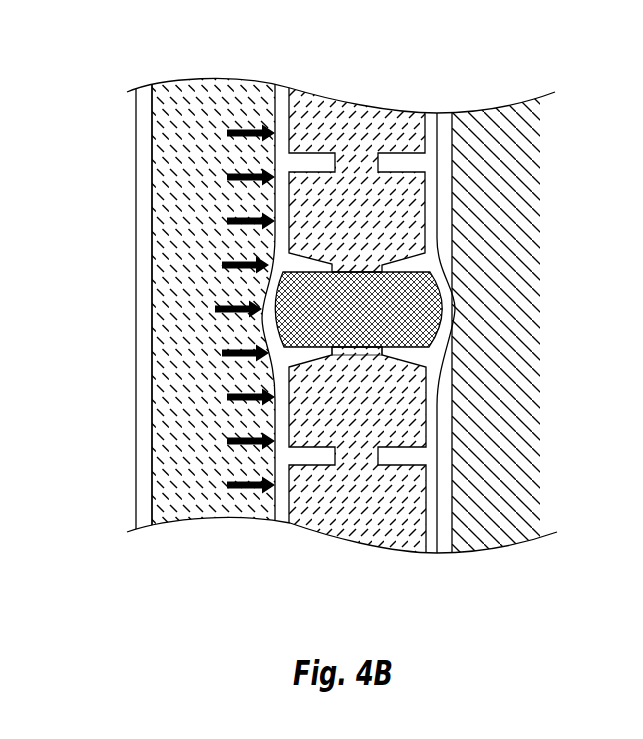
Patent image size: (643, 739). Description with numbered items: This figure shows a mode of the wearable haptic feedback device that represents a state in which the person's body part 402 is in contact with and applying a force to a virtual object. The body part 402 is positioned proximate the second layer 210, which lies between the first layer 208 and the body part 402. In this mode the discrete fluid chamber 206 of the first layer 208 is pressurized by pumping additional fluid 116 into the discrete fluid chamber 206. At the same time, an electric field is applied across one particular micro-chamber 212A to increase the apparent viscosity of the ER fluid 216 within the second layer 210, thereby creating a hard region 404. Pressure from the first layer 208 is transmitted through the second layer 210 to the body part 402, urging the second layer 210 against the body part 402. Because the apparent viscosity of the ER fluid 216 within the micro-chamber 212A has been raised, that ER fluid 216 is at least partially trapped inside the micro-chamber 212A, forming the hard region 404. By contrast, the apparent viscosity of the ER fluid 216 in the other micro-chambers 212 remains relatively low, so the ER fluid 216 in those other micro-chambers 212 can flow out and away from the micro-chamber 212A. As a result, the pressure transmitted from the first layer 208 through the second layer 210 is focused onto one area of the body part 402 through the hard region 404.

The fluid 116 is at (182, 213).
The discrete fluid chamber 206 is at (221, 90).
The first layer 208 is at (150, 560).
The second layer 210 is at (443, 327).
The micro-chambers 212 is at (362, 186).
The micro-chamber 212A is at (417, 306).
The ER fluid 216 is at (413, 516).
The body part 402 is at (440, 113).
The hard region 404 is at (370, 347).